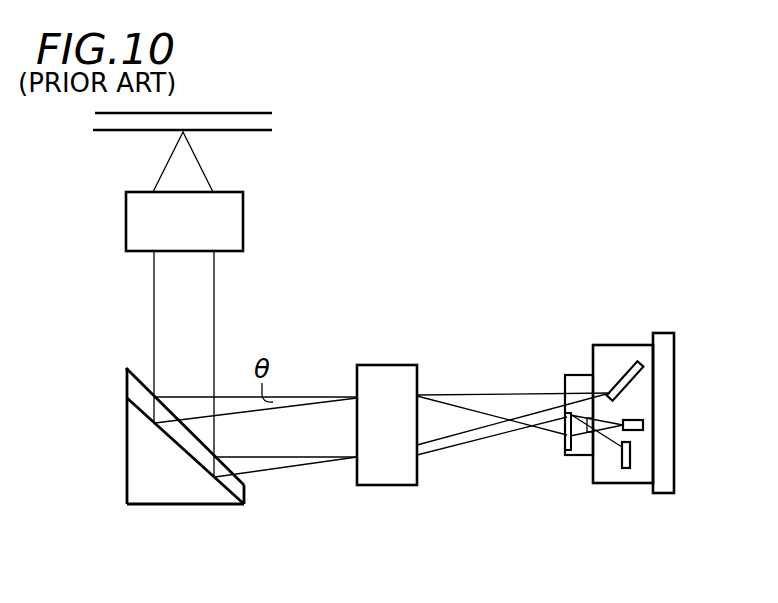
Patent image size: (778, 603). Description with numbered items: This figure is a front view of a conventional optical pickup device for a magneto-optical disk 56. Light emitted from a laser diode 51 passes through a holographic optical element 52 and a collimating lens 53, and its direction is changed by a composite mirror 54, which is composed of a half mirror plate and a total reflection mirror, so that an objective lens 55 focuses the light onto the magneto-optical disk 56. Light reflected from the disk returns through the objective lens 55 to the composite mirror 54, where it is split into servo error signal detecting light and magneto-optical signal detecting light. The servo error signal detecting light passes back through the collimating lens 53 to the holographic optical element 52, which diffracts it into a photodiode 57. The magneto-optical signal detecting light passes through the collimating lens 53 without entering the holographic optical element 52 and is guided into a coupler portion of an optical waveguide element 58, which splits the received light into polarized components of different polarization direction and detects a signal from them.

The laser diode 51 is at (643, 425).
The holographic optical element 52 is at (569, 457).
The collimating lens 53 is at (387, 485).
The composite mirror 54 is at (170, 504).
The objective lens 55 is at (243, 217).
The magneto-optical disk 56 is at (277, 115).
The photodiode 57 is at (630, 455).
The optical waveguide element 58 is at (640, 380).